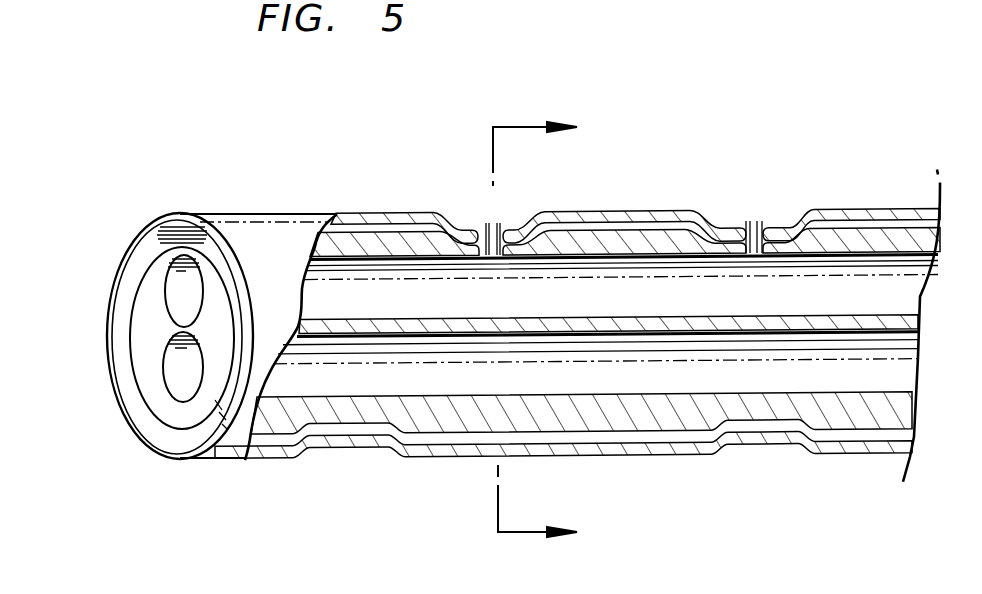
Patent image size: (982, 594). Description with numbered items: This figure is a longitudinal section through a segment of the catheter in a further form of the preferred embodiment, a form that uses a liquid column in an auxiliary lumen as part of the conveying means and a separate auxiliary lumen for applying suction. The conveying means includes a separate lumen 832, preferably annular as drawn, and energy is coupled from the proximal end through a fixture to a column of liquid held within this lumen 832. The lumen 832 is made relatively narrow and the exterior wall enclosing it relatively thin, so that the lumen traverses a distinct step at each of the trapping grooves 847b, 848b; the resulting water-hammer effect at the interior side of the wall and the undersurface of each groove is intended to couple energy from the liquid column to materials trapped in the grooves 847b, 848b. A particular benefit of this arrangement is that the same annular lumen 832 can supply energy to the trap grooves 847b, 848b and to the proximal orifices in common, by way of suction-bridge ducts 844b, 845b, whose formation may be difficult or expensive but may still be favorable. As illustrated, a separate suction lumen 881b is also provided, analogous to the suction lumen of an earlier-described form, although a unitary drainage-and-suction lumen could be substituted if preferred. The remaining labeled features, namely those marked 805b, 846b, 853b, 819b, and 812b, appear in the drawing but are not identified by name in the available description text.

The catheter shaft section 805b is at (935, 192).
The annular lumen 832 is at (163, 240).
The end cap sleeve 846b is at (249, 236).
The trapping groove 847b is at (466, 222).
The suction-bridge duct 844b is at (504, 222).
The suction-bridge duct 845b is at (757, 225).
The trapping groove 848b is at (788, 218).
The suction lumen 881b is at (180, 292).
The shielding layer 853b is at (165, 333).
The second lumen 819b is at (190, 385).
The inner body 812b is at (272, 375).